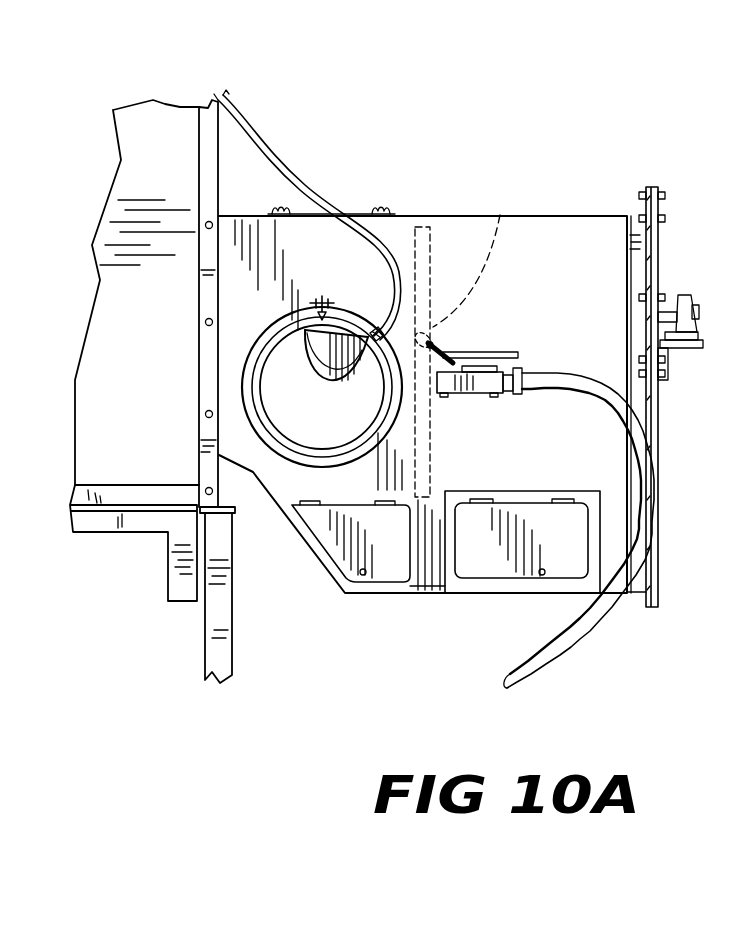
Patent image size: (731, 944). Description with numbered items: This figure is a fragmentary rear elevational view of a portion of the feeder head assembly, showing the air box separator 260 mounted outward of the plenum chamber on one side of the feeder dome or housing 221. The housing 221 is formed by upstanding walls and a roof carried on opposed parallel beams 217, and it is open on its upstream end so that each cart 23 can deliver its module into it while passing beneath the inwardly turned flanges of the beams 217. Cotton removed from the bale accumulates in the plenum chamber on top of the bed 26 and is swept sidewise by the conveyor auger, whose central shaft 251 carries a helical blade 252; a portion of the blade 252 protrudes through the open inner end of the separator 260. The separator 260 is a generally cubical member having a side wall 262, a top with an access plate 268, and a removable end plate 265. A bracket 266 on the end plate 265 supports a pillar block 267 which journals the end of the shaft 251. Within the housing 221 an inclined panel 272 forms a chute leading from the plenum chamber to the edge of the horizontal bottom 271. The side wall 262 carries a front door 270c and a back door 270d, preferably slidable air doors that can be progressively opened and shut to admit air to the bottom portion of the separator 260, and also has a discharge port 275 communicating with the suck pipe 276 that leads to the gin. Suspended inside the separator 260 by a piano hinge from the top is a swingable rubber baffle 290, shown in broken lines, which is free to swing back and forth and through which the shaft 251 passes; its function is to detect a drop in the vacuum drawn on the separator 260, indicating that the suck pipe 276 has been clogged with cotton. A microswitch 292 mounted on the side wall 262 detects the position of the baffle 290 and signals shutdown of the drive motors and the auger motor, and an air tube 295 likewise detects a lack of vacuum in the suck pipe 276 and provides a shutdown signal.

The feeder dome or housing 221 is at (112, 150).
The inclined panel 272 is at (205, 158).
The air tube 295 is at (247, 125).
The access plate 268 is at (358, 212).
The air box separator 260 is at (424, 212).
The side wall 262 is at (556, 252).
The swingable curtain or rubber movable baffle 290 is at (467, 270).
The removable end plate 265 is at (660, 253).
The central shaft 251 is at (665, 312).
The pillar block 267 is at (685, 300).
The bracket 266 is at (678, 352).
The discharge port 275 is at (274, 396).
The suck pipe 276 is at (258, 412).
The helical blade 252 is at (312, 355).
The microswitch 292 is at (470, 395).
The bed 26 is at (88, 522).
The cart 23 is at (124, 552).
The parallel beam 217 is at (212, 633).
The back door 270d is at (377, 577).
The front door 270c is at (507, 577).
The horizontal bottom 271 is at (422, 597).